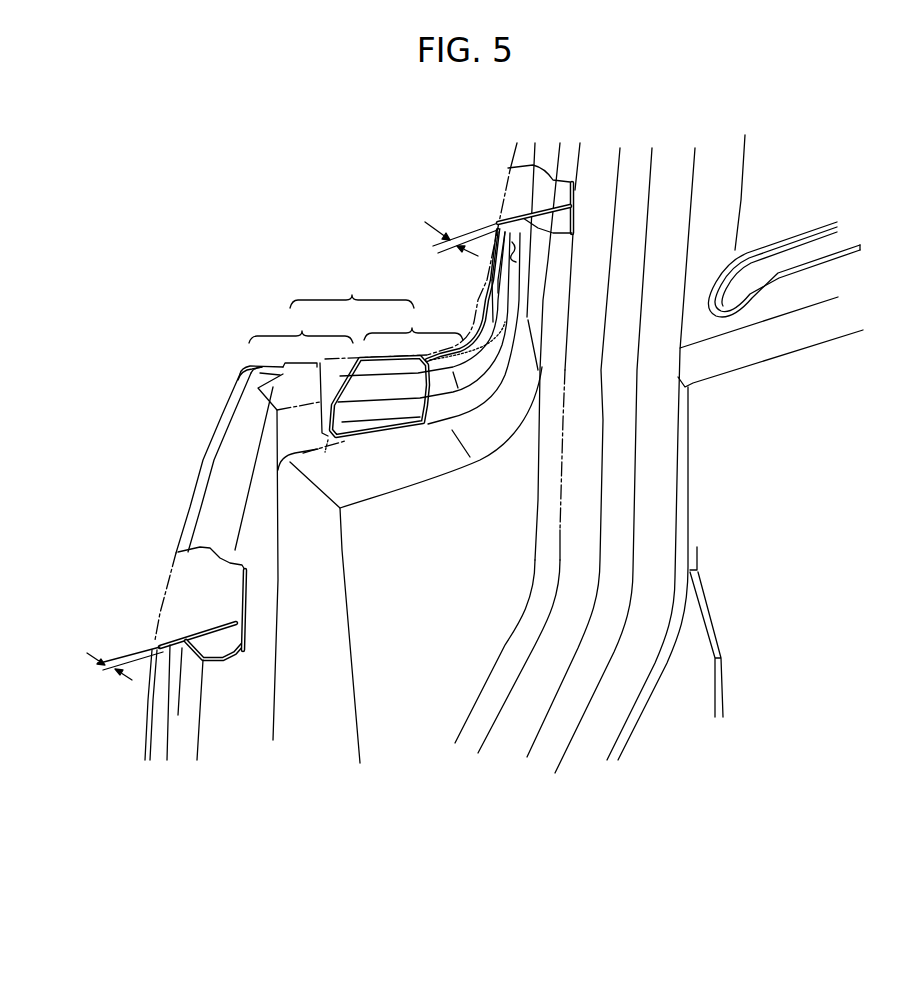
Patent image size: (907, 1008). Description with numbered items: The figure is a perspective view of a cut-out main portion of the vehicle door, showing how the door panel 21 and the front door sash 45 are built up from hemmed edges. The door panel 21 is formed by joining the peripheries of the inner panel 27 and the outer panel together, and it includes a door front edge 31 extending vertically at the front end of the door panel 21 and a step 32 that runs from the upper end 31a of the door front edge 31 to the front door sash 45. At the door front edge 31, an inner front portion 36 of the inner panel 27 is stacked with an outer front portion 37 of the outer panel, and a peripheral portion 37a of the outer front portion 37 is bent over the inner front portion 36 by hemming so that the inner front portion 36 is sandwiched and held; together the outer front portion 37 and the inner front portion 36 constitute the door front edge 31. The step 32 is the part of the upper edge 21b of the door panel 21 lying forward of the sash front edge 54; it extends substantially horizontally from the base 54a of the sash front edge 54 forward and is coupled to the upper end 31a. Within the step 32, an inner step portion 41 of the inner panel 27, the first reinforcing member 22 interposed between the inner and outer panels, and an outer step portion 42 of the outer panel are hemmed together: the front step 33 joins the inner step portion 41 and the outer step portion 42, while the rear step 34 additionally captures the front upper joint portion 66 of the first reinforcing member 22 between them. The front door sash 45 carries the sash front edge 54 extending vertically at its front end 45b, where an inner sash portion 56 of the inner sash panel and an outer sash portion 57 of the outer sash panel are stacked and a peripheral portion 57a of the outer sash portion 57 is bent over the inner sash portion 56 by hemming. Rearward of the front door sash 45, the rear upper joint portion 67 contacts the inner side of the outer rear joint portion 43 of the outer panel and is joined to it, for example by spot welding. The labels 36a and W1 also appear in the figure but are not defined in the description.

The door panel 21 is at (205, 400).
The upper edge 21b is at (830, 270).
The first reinforcing member 22 is at (382, 396).
The inner panel 27 is at (488, 600).
The door front edge 31 is at (190, 509).
The upper end 31a is at (233, 372).
The step 32 is at (352, 288).
The front step 33 is at (301, 372).
The rear step 34 is at (431, 295).
The inner front portion 36 is at (173, 665).
The bracket flange 36a is at (218, 468).
The outer front portion 37 is at (204, 463).
The peripheral portion 37a is at (165, 702).
The inner step portion 41 is at (306, 372).
The outer step portion 42 is at (450, 362).
The outer rear joint portion 43 is at (762, 247).
The front door sash 45 is at (503, 147).
The front end 45b is at (522, 222).
The sash front edge 54 is at (486, 279).
The base 54a is at (493, 322).
The inner sash portion 56 is at (515, 250).
The outer sash portion 57 is at (497, 223).
The peripheral portion 57a is at (498, 293).
The front upper joint portion 66 is at (399, 370).
The rear upper joint portion 67 is at (798, 255).
The hem width W1 is at (97, 668).